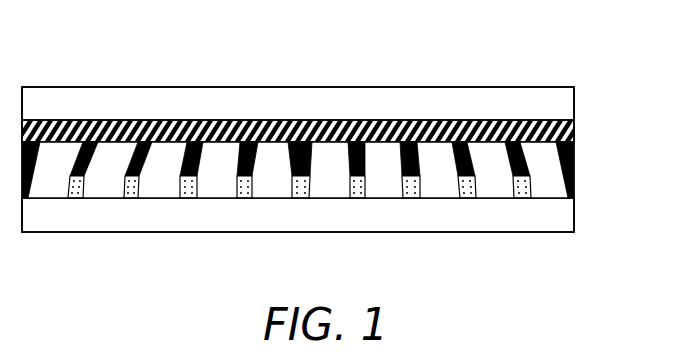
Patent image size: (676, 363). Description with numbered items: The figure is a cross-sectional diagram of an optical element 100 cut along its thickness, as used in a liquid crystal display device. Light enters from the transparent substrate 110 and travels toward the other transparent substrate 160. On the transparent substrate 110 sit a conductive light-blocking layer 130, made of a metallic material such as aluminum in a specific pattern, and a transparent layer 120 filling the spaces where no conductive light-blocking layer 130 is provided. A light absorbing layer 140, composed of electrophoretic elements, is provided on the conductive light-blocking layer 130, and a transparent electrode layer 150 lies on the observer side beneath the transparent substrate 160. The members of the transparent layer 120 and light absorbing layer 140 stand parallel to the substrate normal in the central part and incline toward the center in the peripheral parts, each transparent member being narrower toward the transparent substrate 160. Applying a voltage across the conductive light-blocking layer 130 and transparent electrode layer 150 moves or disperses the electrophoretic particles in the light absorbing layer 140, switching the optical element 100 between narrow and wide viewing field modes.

The optical element 100 is at (298, 125).
The transparent substrate 110 is at (334, 209).
The transparent layer 120 is at (500, 190).
The conductive light-blocking layer 130 is at (410, 190).
The light absorbing layer 140 is at (395, 172).
The transparent electrode layer 150 is at (326, 119).
The transparent substrate 160 is at (333, 93).